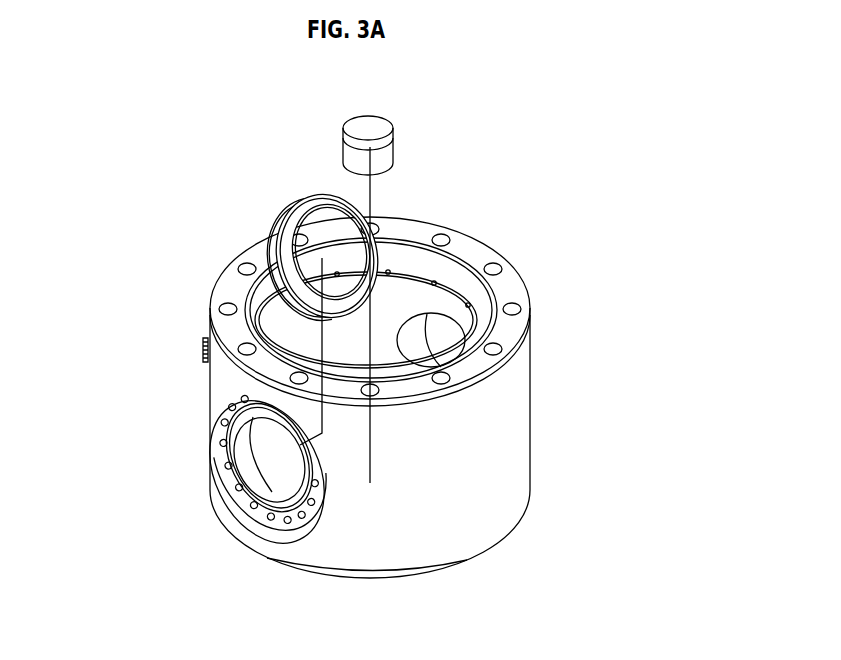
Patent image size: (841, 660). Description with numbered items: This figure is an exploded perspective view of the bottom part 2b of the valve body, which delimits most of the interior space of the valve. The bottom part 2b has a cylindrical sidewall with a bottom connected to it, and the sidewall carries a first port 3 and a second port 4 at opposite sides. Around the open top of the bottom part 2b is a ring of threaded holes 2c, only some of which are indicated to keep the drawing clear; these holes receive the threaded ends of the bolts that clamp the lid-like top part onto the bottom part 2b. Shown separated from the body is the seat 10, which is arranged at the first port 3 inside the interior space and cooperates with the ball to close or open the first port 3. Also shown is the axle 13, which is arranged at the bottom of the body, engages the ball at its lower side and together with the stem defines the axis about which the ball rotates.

The bottom part 2b is at (482, 450).
The threaded holes 2c is at (240, 350).
The first port 3 is at (283, 465).
The second port 4 is at (444, 340).
The seat 10 is at (316, 201).
The axle 13 is at (368, 133).